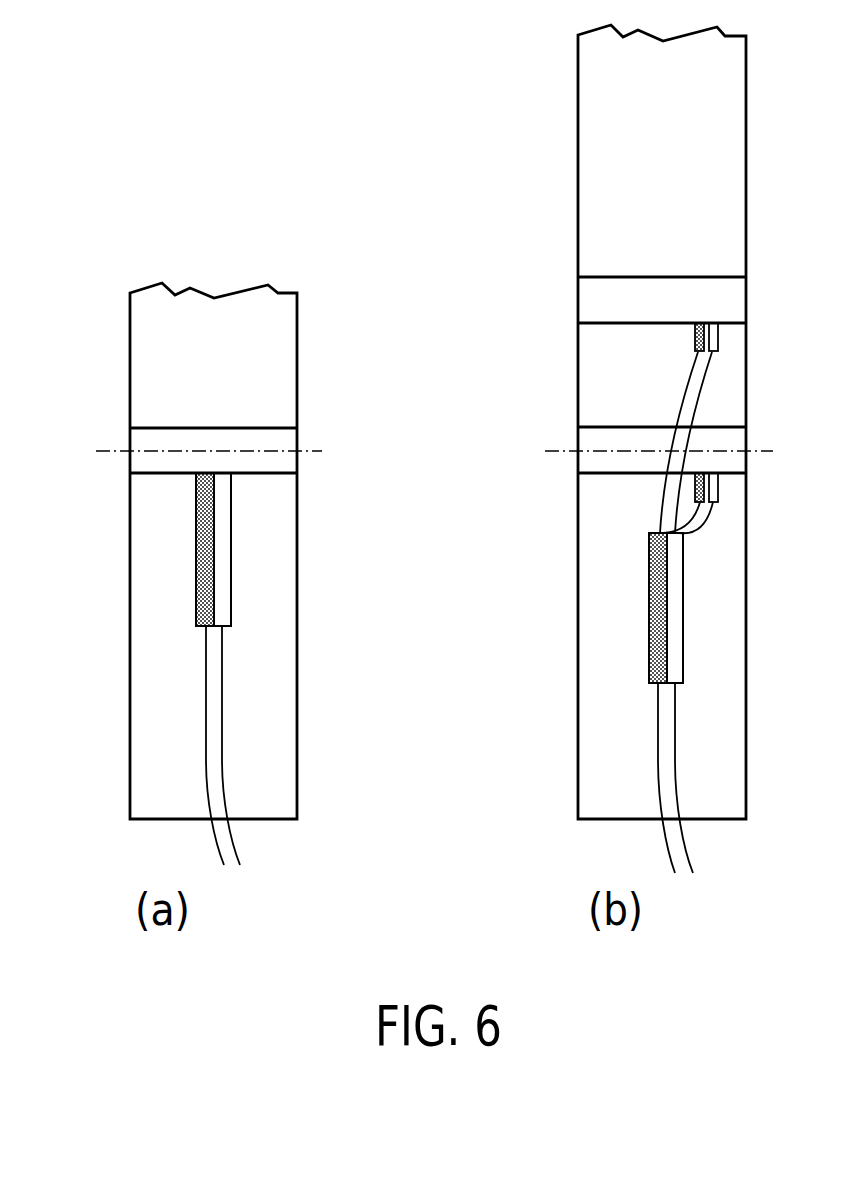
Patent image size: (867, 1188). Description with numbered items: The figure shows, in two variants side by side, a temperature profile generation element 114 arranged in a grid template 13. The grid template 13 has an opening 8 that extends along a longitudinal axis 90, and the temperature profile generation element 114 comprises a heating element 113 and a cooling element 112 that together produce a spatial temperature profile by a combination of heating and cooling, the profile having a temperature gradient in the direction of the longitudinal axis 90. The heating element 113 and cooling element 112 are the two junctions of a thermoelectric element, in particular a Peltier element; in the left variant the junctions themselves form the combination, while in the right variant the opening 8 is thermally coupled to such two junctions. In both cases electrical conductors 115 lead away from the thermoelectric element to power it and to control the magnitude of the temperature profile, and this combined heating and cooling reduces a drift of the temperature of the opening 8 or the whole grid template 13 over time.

The opening 8 is at (210, 668).
The grid template 13 is at (130, 357).
The longitudinal axis 90 is at (322, 452).
The cooling element 112 is at (196, 556).
The heating element 113 is at (231, 560).
The temperature profile generation element 114 is at (192, 603).
The electrical conductors 115 is at (224, 713).